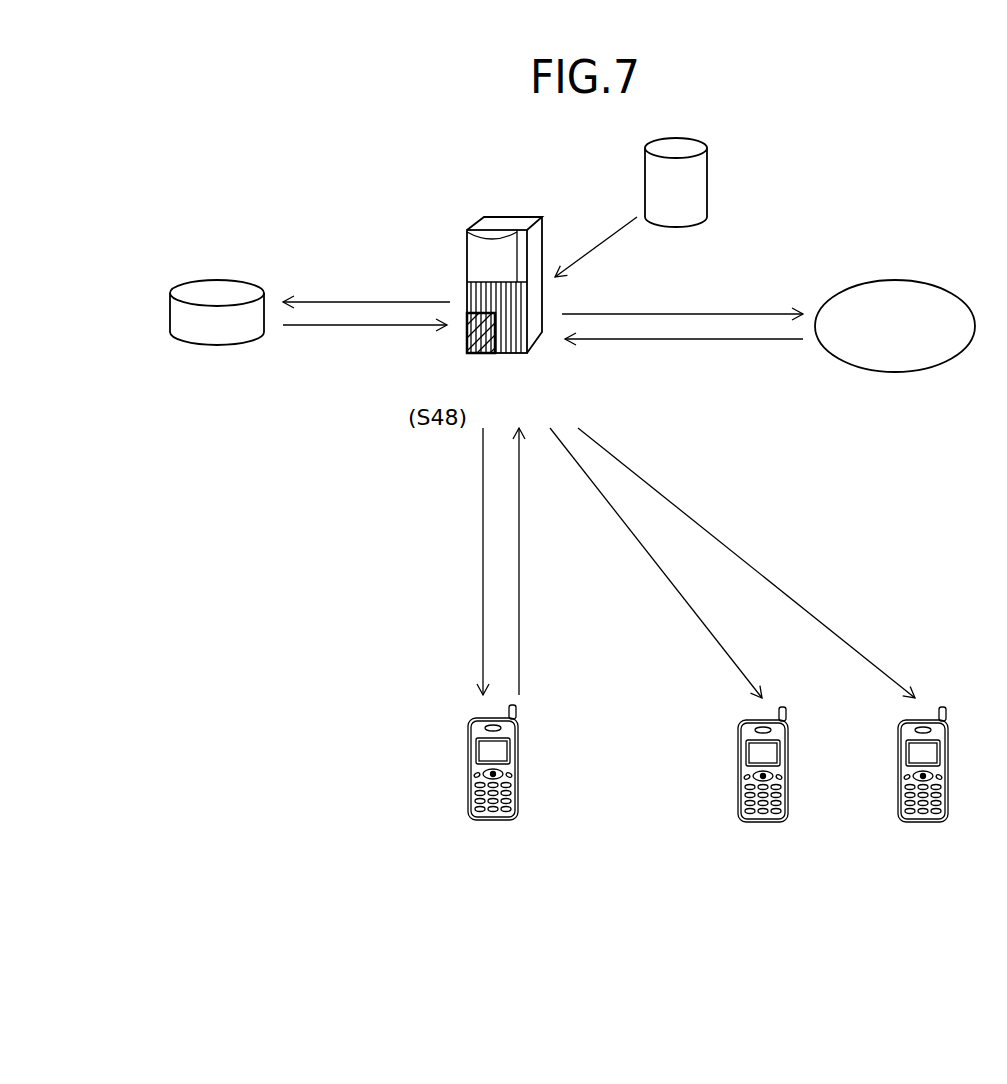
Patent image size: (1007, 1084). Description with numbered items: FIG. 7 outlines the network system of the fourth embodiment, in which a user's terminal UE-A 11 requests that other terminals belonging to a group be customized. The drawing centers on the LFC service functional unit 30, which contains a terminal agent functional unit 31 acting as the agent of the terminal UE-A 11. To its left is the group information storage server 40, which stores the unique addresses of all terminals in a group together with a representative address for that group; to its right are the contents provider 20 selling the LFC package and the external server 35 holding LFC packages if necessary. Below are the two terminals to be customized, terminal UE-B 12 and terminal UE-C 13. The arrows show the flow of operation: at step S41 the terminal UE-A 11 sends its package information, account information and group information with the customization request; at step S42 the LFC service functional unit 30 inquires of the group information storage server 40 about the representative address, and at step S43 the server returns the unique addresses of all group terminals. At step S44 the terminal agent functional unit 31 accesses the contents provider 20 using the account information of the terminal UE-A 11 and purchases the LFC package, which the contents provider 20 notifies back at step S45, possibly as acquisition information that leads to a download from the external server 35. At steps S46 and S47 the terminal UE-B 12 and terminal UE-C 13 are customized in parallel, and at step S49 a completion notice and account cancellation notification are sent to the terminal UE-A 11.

The terminal UE-A 11 is at (519, 730).
The terminal UE-B 12 is at (791, 736).
The terminal UE-C 13 is at (951, 736).
The contents provider 20 is at (943, 284).
The LFC service functional unit 30 is at (518, 217).
The terminal agent functional unit 31 is at (468, 351).
The external server 35 is at (707, 175).
The group information storage server 40 is at (228, 282).
The step S41 is at (521, 590).
The step S42 is at (357, 300).
The step S43 is at (357, 328).
The step S44 is at (689, 312).
The step S45 is at (692, 341).
The step S46 is at (666, 576).
The step S47 is at (757, 570).
The step S49 is at (483, 583).